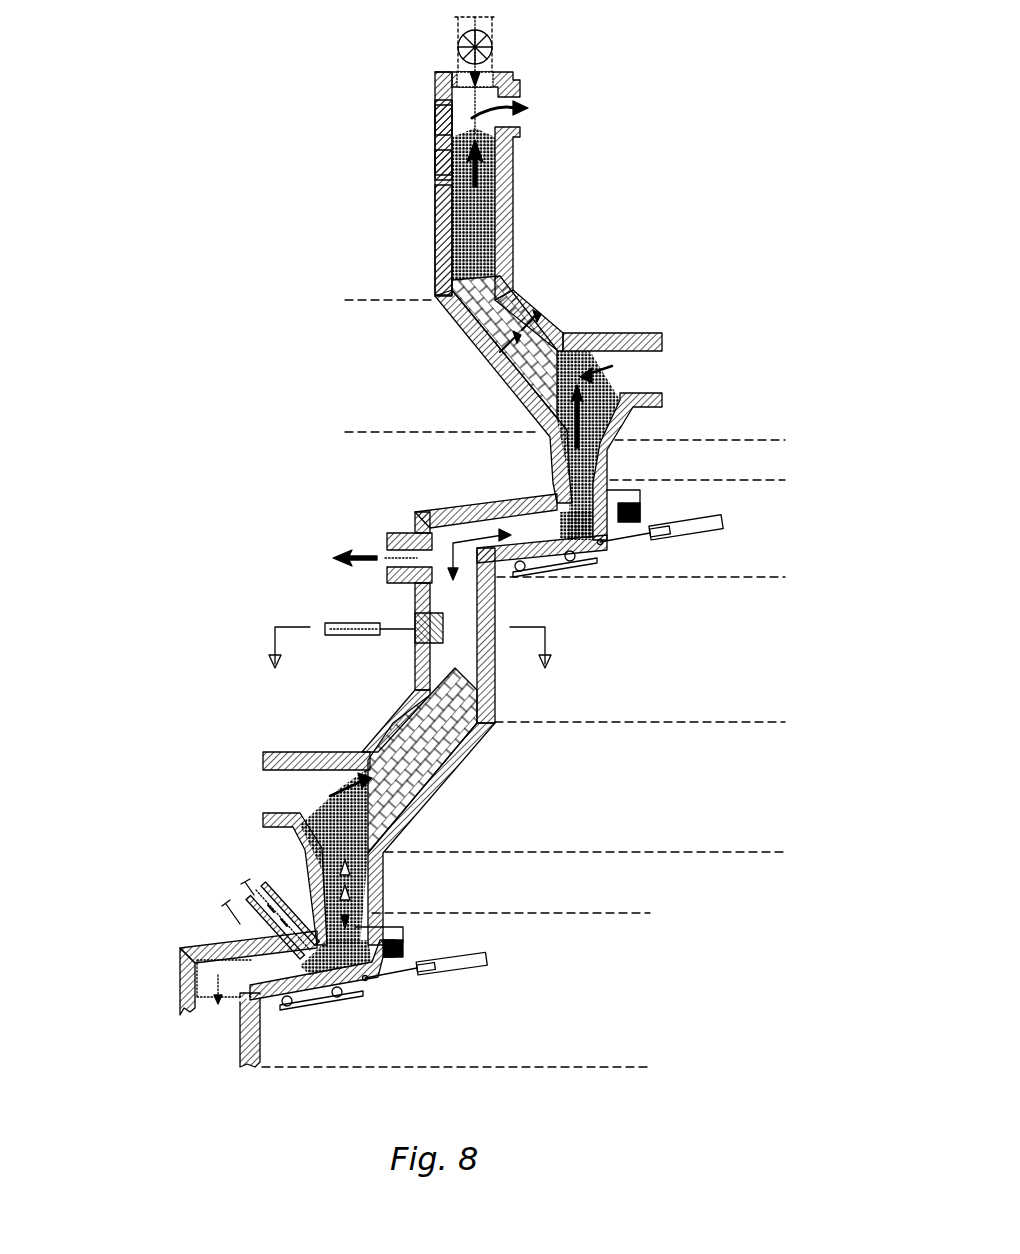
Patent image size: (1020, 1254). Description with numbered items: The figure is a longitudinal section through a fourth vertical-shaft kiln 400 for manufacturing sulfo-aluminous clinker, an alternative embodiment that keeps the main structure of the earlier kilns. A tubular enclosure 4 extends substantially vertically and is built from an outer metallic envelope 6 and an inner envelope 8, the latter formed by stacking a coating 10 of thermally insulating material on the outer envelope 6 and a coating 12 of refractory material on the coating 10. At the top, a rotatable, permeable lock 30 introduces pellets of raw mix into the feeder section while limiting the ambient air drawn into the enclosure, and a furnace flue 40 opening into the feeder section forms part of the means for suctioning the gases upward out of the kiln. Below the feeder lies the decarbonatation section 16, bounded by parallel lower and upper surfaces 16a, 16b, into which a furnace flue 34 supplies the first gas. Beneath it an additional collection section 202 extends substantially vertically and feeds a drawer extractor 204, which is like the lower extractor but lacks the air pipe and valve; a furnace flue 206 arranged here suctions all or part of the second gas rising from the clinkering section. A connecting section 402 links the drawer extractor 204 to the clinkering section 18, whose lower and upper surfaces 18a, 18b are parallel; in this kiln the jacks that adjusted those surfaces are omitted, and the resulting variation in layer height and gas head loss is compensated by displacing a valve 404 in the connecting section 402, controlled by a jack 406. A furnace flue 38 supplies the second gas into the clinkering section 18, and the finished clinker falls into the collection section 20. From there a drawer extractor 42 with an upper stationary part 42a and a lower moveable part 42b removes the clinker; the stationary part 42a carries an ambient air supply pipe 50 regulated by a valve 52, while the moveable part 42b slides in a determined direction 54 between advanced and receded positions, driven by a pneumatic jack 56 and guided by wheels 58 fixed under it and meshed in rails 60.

The fourth kiln 400 is at (276, 170).
The tubular enclosure 4 is at (428, 84).
The outer metallic envelope 6 is at (435, 195).
The inner envelope 8 is at (341, 105).
The thermally insulating coating 10 is at (435, 120).
The refractory coating 12 is at (440, 157).
The lock 30 is at (493, 45).
The furnace flue 40 is at (522, 108).
The decarbonatation section 16 is at (338, 300).
The lower surface of the decarbonatation section 16a is at (468, 356).
The upper surface of the decarbonatation section 16b is at (545, 288).
The furnace flue 34 is at (636, 332).
The additional collection section 202 is at (777, 440).
The drawer extractor 204 is at (777, 480).
The furnace flue 206 is at (397, 530).
The connecting section 402 is at (777, 577).
The valve 404 is at (415, 618).
The jack 406 is at (325, 625).
The clinkering section 18 is at (777, 722).
The lower surface of the clinkering section 18a is at (455, 792).
The upper surface of the clinkering section 18b is at (383, 718).
The furnace flue 38 is at (263, 762).
The collection section 20 is at (642, 852).
The drawer extractor 42 is at (642, 913).
The upper stationary part 42a is at (182, 945).
The lower moveable part 42b is at (320, 998).
The ambient air supply pipe 50 is at (236, 924).
The valve 52 is at (250, 900).
The displacement direction 54 is at (405, 975).
The pneumatic jack 56 is at (490, 962).
The wheels 58 is at (347, 998).
The rails 60 is at (287, 1004).